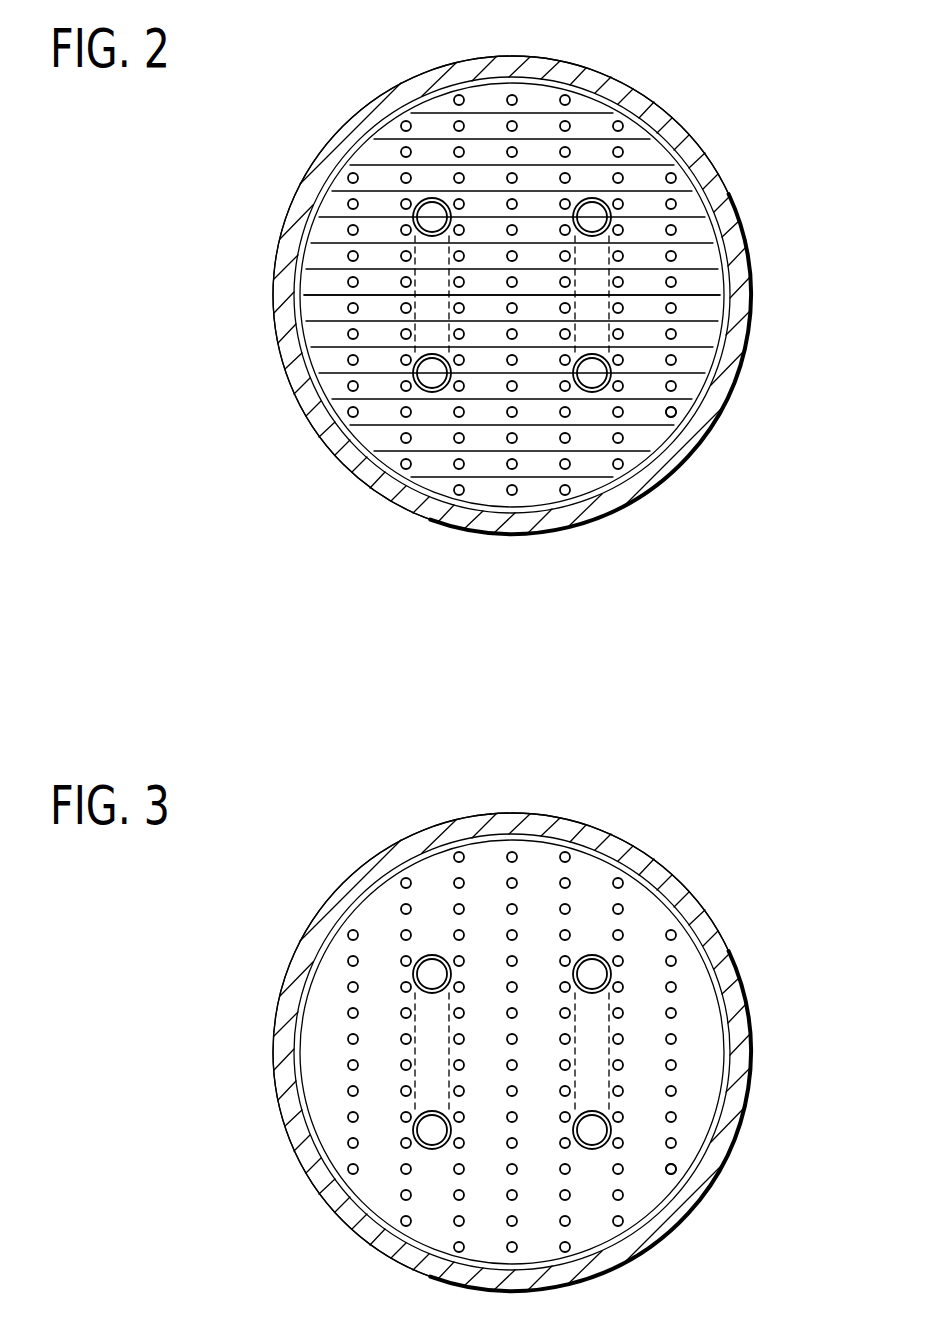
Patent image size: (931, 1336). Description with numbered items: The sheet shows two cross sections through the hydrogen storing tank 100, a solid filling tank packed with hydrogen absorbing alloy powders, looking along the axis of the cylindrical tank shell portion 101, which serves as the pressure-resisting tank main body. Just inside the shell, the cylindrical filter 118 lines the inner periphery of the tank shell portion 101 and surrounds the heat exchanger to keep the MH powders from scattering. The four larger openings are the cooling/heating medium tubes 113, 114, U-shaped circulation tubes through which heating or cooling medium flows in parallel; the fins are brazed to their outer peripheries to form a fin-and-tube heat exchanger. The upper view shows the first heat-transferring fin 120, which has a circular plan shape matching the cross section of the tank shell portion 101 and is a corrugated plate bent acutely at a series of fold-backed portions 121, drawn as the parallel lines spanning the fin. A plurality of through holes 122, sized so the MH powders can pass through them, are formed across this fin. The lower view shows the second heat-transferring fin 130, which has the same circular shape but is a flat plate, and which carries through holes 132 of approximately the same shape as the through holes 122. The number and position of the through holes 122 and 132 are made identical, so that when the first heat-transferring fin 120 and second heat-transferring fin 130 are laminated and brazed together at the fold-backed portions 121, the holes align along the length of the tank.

In FIG. 2, the hydrogen storing tank 100 is at (657, 76).
In FIG. 3, the hydrogen storing tank 100 is at (512, 1022).
In FIG. 2, the tank shell portion 101 is at (691, 133).
In FIG. 3, the tank shell portion 101 is at (529, 1052).
In FIG. 2, the cylindrical filter 118 is at (722, 188).
In FIG. 3, the cylindrical filter 118 is at (556, 1052).
In FIG. 2, the cooling/heating medium tube 113 is at (610, 216).
In FIG. 3, the cooling/heating medium tube 113 is at (613, 1109).
In FIG. 2, the cooling/heating medium tube 114 is at (413, 209).
In FIG. 3, the cooling/heating medium tube 114 is at (408, 1055).
In FIG. 2, the first heat-transferring fin 120 is at (715, 280).
In FIG. 2, the fold-backed portion 121 is at (707, 295).
In FIG. 2, the through hole 122 is at (672, 411).
In FIG. 3, the second heat-transferring fin 130 is at (590, 1052).
In FIG. 3, the through hole 132 is at (737, 1177).